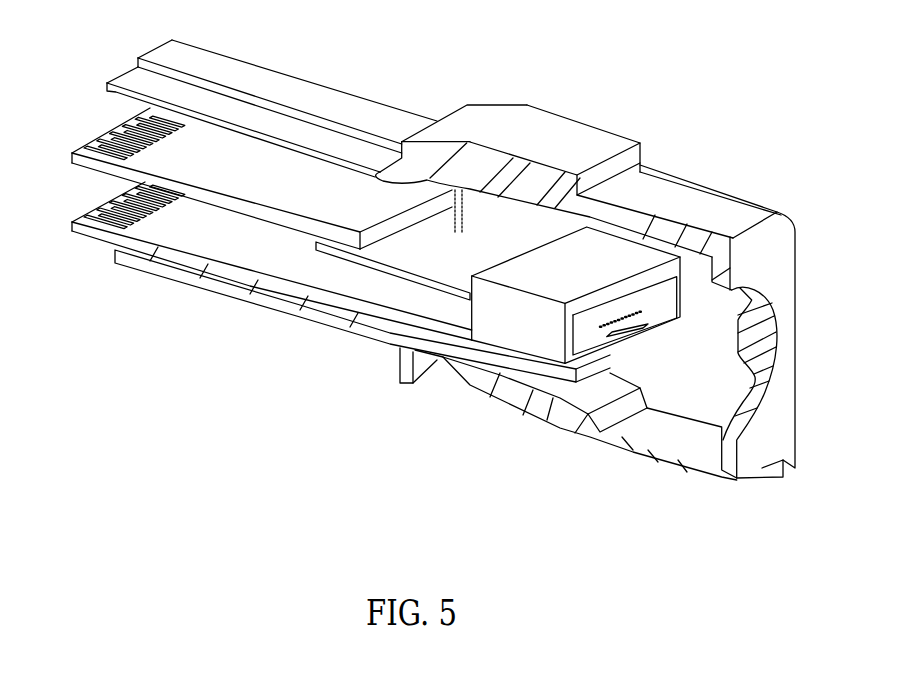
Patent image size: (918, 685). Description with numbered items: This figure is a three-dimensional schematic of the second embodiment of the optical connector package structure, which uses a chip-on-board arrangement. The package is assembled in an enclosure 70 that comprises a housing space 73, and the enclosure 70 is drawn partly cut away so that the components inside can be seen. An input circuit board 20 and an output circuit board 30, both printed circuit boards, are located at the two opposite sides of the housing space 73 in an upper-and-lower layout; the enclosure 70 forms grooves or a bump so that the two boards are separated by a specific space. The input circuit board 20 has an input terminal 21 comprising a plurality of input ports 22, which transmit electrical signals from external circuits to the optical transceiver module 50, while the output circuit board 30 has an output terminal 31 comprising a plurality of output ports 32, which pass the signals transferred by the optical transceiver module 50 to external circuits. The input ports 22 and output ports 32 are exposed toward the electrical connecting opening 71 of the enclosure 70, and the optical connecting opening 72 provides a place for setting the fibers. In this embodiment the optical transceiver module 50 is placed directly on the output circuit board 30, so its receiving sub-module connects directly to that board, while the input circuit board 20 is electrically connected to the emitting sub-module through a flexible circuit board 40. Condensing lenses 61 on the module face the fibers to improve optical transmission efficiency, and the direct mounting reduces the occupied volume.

The input circuit board 20 is at (233, 138).
The input terminal 21 is at (72, 153).
The input ports 22 is at (107, 133).
The output circuit board 30 is at (312, 282).
The output terminal 31 is at (72, 222).
The output ports 32 is at (93, 227).
The flexible circuit board 40 is at (390, 280).
The optical transceiver module 50 is at (586, 295).
The condensing lens 61 is at (645, 310).
The enclosure 70 is at (712, 190).
The electrical connecting opening 71 is at (103, 100).
The optical connecting opening 72 is at (765, 413).
The housing space 73 is at (678, 404).